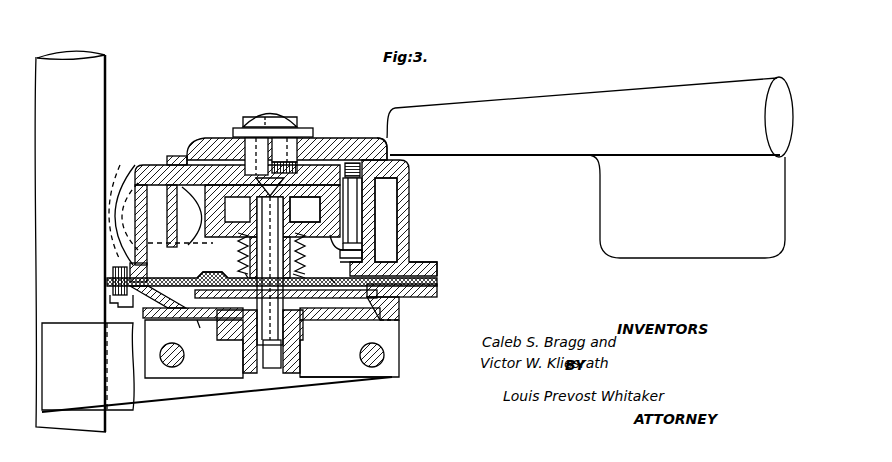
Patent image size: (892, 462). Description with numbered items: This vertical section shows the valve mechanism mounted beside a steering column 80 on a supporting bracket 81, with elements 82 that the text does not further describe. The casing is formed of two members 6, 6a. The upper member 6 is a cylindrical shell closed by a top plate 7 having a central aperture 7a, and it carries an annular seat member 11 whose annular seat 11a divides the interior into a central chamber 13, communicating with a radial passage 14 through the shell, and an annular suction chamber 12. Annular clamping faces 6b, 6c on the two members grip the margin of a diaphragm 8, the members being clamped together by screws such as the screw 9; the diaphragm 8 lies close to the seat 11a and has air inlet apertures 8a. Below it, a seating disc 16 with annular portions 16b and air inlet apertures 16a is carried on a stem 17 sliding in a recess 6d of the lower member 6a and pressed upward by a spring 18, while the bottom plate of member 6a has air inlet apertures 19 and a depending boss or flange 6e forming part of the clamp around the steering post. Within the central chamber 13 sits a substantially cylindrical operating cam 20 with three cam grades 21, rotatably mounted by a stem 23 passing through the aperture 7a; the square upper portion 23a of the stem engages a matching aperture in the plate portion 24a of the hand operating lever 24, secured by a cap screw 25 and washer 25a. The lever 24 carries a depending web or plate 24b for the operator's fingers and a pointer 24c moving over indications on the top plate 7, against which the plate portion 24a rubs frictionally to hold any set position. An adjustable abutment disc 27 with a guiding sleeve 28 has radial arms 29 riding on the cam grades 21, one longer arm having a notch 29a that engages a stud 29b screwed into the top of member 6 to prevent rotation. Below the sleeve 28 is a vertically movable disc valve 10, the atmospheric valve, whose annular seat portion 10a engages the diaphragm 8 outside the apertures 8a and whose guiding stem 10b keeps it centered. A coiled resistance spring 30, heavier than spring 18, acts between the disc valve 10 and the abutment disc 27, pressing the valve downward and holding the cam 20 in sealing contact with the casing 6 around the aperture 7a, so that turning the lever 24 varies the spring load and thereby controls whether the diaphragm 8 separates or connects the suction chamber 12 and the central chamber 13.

The casing member 6 is at (398, 217).
The casing member 6a is at (372, 306).
The annular clamping face 6b is at (440, 264).
The annular clamping face 6c is at (440, 296).
The recess 6d is at (278, 368).
The depending boss or flange 6e is at (322, 372).
The top plate 7 is at (190, 156).
The central aperture 7a is at (318, 155).
The diaphragm 8 is at (440, 282).
The air inlet apertures 8a is at (212, 288).
The screw 9 is at (107, 292).
The disc valve 10 is at (208, 274).
The annular seat portion 10a is at (360, 275).
The guiding stem 10b is at (266, 215).
The annular seat member 11 is at (342, 251).
The annular seat 11a is at (405, 268).
The annular chamber 12 is at (385, 202).
The central chamber 13 is at (312, 261).
The radial passage 14 is at (193, 208).
The seating disc 16 is at (243, 337).
The air inlet apertures 16a is at (225, 298).
The annular portions 16b is at (383, 325).
The stem 17 is at (267, 355).
The spring 18 is at (305, 318).
The air inlet apertures 19 is at (197, 325).
The operating cam 20 is at (167, 183).
The cam grades 21 is at (240, 178).
The stem 23 is at (247, 165).
The upper portion of stem 23a is at (262, 130).
The hand operating lever 24 is at (537, 108).
The plate portion 24a is at (386, 140).
The depending web or plate 24b is at (686, 206).
The pointer 24c is at (172, 155).
The cap screw 25 is at (284, 130).
The washer 25a is at (292, 132).
The adjustable abutment disc 27 is at (313, 243).
The guiding sleeve 28 is at (238, 243).
The radial arms 29 is at (195, 216).
The notch 29a is at (347, 240).
The stud 29b is at (348, 186).
The coiled spring 30 is at (240, 259).
The steering post 80 is at (70, 241).
The bracket 81 is at (217, 367).
The bolt holes 82 is at (170, 344).